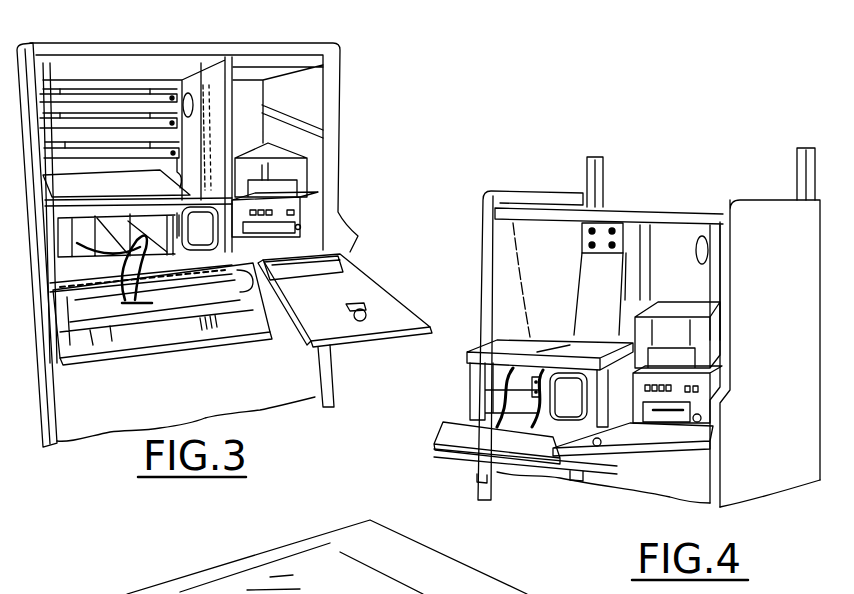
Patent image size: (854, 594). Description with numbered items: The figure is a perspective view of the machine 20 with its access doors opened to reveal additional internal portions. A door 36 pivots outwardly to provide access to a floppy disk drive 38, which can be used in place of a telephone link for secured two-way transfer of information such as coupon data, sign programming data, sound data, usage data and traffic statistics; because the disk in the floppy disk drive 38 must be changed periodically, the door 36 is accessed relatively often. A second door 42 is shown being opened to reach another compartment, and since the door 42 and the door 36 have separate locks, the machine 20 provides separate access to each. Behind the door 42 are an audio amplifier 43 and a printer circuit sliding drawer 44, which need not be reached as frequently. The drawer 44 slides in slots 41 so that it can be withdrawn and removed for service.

In FIG. 3, the machine 20 is at (365, 116).
In FIG. 3, the door 36 is at (358, 280).
In FIG. 3, the floppy disk drive 38 is at (300, 200).
In FIG. 4, the slots 41 is at (576, 335).
In FIG. 3, the door 42 is at (110, 346).
In FIG. 4, the door 42 is at (440, 440).
In FIG. 3, the audio amplifier 43 is at (207, 235).
In FIG. 3, the printer circuit sliding drawer 44 is at (186, 200).
In FIG. 4, the printer circuit sliding drawer 44 is at (478, 376).